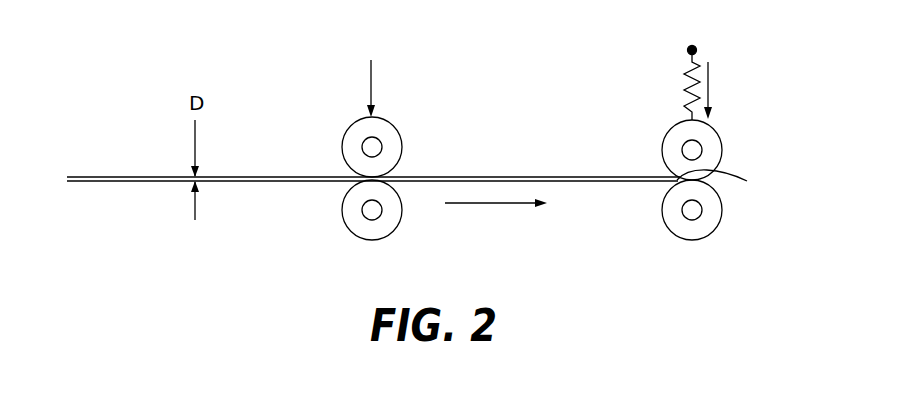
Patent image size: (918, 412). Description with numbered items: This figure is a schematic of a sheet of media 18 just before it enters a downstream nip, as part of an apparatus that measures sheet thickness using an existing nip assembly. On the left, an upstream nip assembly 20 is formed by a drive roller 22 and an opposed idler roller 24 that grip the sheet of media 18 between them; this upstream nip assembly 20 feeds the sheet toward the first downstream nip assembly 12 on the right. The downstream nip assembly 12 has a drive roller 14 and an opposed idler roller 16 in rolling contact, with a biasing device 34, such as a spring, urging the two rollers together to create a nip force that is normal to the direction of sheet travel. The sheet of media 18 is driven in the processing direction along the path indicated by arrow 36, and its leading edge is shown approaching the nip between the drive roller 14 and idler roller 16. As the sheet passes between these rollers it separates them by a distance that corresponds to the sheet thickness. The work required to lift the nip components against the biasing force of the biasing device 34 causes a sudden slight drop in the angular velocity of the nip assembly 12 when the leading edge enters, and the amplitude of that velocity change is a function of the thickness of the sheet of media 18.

The first downstream nip assembly 12 is at (691, 132).
The drive roller 14 is at (722, 208).
The idler roller 16 is at (723, 150).
The sheet of media 18 is at (128, 182).
The upstream nip assembly 20 is at (371, 144).
The drive roller 22 is at (345, 223).
The idler roller 24 is at (397, 128).
The biasing device 34 is at (683, 80).
The arrow 36 is at (495, 205).